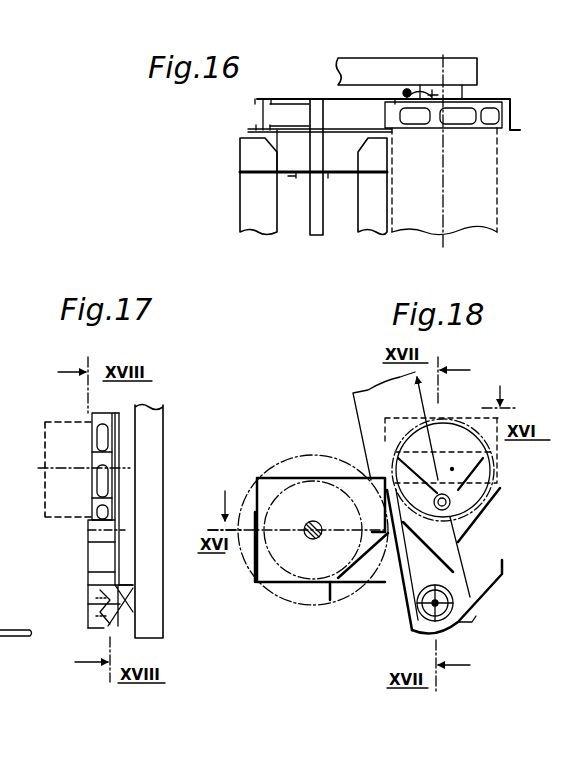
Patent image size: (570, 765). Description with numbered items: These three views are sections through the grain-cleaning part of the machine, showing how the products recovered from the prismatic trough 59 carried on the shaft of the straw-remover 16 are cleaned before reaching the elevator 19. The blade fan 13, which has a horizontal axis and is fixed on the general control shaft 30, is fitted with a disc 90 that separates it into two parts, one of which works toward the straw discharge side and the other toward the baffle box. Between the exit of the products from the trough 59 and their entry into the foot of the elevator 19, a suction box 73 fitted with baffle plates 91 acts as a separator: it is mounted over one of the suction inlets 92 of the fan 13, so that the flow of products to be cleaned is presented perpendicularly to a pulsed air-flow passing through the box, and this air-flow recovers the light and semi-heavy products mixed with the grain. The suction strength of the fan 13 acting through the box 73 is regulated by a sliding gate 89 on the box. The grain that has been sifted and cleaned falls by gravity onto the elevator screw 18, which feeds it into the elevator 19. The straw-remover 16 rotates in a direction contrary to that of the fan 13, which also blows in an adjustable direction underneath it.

In FIG. 16, the blade fan 13 is at (239, 205).
In FIG. 18, the blade fan 13 is at (322, 575).
In FIG. 16, the straw-remover 16 is at (500, 193).
In FIG. 17, the straw-remover 16 is at (48, 497).
In FIG. 17, the elevator screw 18 is at (98, 600).
In FIG. 18, the elevator screw 18 is at (427, 613).
In FIG. 16, the elevator 19 is at (478, 76).
In FIG. 17, the elevator 19 is at (155, 625).
In FIG. 18, the elevator 19 is at (460, 628).
In FIG. 16, the general control shaft 30 is at (318, 220).
In FIG. 18, the general control shaft 30 is at (311, 522).
In FIG. 18, the prismatic trough 59 is at (443, 470).
In FIG. 16, the suction box 73 is at (288, 112).
In FIG. 17, the suction box 73 is at (90, 558).
In FIG. 18, the suction box 73 is at (278, 460).
In FIG. 16, the sliding gate 89 is at (256, 115).
In FIG. 18, the sliding gate 89 is at (256, 542).
In FIG. 16, the disc 90 is at (292, 174).
In FIG. 18, the baffle plates 91 is at (452, 557).
In FIG. 16, the suction inlets 92 is at (294, 130).